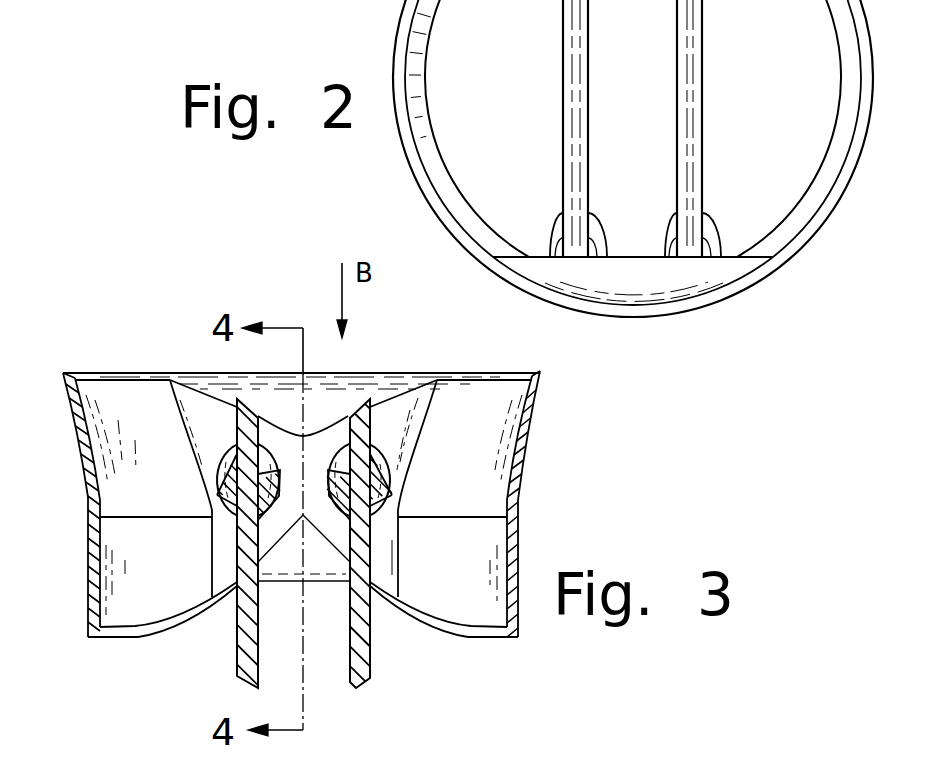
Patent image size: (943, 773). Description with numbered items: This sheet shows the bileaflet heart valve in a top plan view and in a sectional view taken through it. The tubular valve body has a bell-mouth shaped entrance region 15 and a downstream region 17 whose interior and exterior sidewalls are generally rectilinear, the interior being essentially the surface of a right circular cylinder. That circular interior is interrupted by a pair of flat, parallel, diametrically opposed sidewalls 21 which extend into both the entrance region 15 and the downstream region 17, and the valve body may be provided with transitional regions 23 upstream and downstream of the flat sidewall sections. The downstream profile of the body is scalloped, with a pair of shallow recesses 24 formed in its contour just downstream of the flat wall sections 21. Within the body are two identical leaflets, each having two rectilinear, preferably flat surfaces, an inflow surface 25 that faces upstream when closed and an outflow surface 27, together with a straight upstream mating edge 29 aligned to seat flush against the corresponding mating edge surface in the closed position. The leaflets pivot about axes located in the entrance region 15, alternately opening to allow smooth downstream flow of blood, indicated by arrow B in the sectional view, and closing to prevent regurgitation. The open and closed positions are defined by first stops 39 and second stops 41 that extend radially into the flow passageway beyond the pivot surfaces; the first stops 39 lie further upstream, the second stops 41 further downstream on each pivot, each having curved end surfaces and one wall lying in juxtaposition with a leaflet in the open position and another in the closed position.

In FIG. 3, the entrance region 15 is at (513, 390).
In FIG. 3, the downstream region 17 is at (112, 568).
In FIG. 2, the flat sidewalls 21 is at (626, 255).
In FIG. 3, the flat sidewalls 21 is at (203, 405).
In FIG. 2, the transitional regions 23 is at (700, 283).
In FIG. 3, the transitional regions 23 is at (381, 384).
In FIG. 3, the shallow recesses 24 is at (405, 608).
In FIG. 2, the inflow surface 25 is at (563, 46).
In FIG. 3, the inflow surface 25 is at (237, 616).
In FIG. 2, the outflow surface 27 is at (677, 50).
In FIG. 3, the outflow surface 27 is at (353, 665).
In FIG. 3, the upstream mating edge 29 is at (355, 407).
In FIG. 2, the first stops 39 is at (552, 228).
In FIG. 3, the first stops 39 is at (381, 462).
In FIG. 2, the second stops 41 is at (665, 231).
In FIG. 3, the second stops 41 is at (273, 575).